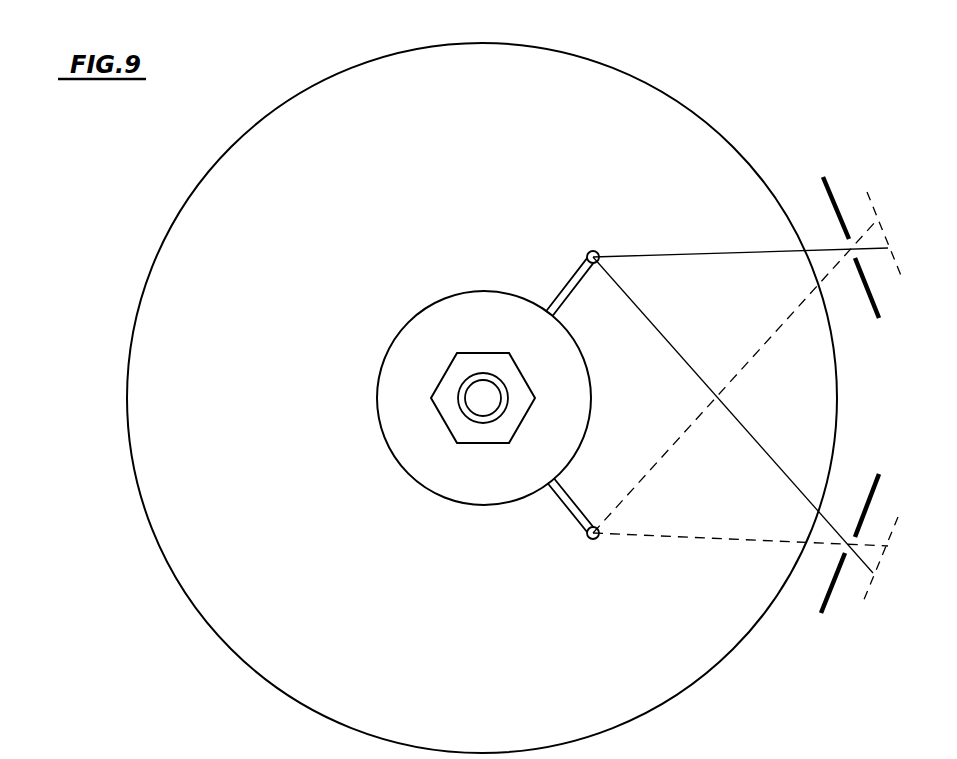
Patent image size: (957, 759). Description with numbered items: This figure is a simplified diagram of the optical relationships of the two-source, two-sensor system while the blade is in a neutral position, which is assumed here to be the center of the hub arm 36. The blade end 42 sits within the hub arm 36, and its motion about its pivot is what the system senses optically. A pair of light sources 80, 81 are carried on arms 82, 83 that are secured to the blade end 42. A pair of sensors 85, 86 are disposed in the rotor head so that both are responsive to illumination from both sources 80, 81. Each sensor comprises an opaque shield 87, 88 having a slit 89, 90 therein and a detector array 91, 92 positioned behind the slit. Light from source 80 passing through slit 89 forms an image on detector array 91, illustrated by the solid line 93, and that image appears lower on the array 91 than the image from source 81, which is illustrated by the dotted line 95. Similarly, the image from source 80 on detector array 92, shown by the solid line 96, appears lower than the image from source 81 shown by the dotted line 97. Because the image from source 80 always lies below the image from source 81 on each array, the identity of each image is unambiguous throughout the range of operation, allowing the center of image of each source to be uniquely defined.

The hub arm 36 is at (641, 79).
The blade end 42 is at (433, 483).
The light source 80 is at (588, 254).
The light source 81 is at (588, 536).
The arm 82 is at (572, 280).
The arm 83 is at (571, 510).
The sensor 85 is at (851, 163).
The sensor 86 is at (841, 614).
The opaque shield 87 is at (880, 311).
The opaque shield 88 is at (880, 479).
The slit 89 is at (851, 257).
The slit 90 is at (852, 538).
The detector array 91 is at (872, 206).
The detector array 92 is at (865, 600).
The solid line 93 is at (709, 252).
The dotted line 95 is at (764, 347).
The solid line 96 is at (766, 455).
The dotted line 97 is at (700, 540).